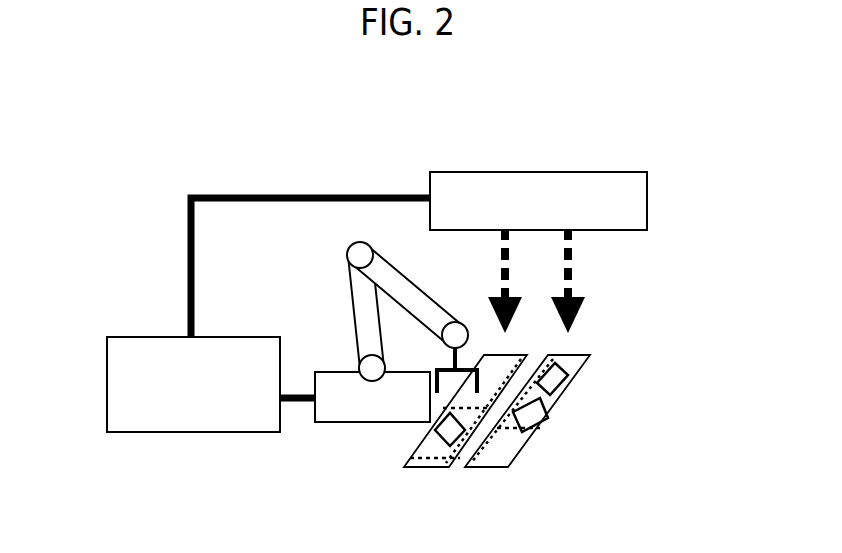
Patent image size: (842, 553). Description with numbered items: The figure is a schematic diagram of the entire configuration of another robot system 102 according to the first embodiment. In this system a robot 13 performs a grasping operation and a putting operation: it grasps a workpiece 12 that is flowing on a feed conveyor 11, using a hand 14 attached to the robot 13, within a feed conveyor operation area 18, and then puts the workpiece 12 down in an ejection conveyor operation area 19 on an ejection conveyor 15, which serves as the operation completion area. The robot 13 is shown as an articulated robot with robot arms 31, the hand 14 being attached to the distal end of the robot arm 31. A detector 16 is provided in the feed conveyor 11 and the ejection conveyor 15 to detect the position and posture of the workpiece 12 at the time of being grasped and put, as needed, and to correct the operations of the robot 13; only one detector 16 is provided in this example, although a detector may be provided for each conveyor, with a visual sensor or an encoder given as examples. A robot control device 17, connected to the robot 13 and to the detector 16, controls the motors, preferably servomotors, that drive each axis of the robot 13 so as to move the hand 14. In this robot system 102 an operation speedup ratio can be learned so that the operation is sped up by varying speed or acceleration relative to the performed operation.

The robot system 102 is at (378, 150).
The detector 16 is at (632, 171).
The robot control device 17 is at (172, 432).
The robot 13 is at (368, 422).
The robot arm 31 is at (352, 345).
The hand 14 is at (441, 368).
The ejection conveyor 15 is at (438, 467).
The ejection conveyor operation area 19 is at (425, 450).
The feed conveyor 11 is at (503, 448).
The feed conveyor operation area 18 is at (562, 400).
The workpiece 12 is at (535, 427).